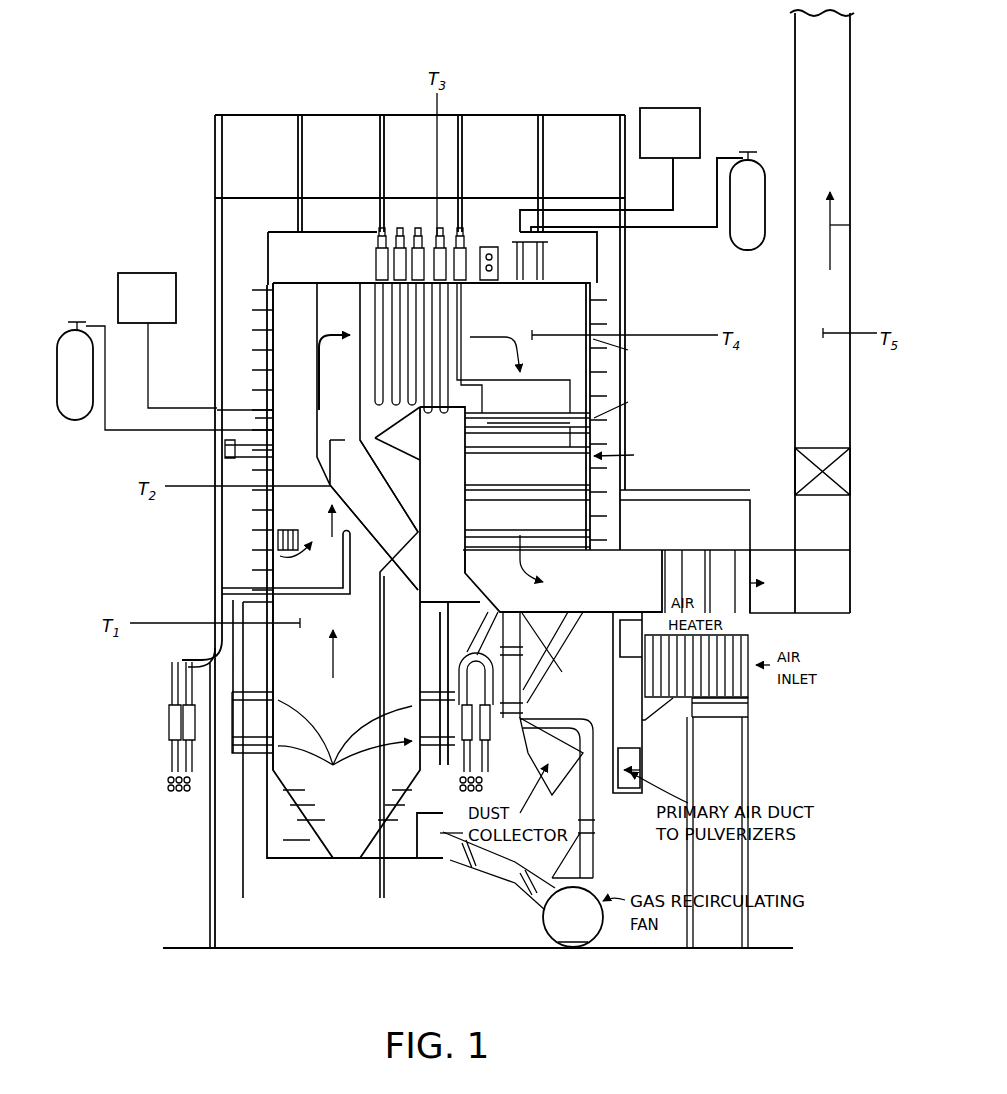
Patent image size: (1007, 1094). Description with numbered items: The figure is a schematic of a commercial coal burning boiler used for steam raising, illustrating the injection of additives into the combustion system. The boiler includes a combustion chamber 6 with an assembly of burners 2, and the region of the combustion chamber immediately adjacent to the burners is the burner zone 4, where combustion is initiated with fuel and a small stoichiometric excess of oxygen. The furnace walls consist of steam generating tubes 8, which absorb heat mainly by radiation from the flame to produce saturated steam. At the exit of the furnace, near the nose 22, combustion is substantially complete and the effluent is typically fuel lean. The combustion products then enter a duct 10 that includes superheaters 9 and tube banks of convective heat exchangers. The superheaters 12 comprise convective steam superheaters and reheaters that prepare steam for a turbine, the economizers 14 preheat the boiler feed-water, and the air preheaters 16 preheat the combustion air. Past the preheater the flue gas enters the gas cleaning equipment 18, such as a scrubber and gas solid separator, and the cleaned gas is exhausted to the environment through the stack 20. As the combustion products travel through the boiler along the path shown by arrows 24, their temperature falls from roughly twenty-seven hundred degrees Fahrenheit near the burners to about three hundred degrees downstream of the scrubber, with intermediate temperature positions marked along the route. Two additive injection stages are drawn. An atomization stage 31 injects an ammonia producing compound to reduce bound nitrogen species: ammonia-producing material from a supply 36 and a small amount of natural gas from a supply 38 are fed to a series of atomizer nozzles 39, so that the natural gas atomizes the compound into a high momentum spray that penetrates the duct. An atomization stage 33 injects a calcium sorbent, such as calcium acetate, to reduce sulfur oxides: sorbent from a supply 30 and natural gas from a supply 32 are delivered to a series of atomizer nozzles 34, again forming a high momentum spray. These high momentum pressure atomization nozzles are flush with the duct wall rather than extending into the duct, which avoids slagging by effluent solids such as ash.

The burners 2 is at (343, 753).
The burner zone 4 is at (357, 724).
The combustion chamber 6 is at (273, 777).
The steam generating tubes 8 is at (222, 555).
The superheaters 9 is at (375, 253).
The duct 10 is at (468, 317).
The superheaters 12 is at (752, 490).
The economizers 14 is at (610, 522).
The air preheaters 16 is at (724, 567).
The gas cleaning equipment 18 is at (850, 470).
The stack 20 is at (850, 160).
The nose 22 is at (375, 440).
The arrows 24 is at (328, 345).
The supply 30 is at (176, 290).
The atomization stage 31 is at (707, 62).
The supply 32 is at (60, 332).
The atomization stage 33 is at (99, 264).
The atomizer nozzles 34 is at (235, 460).
The supply 36 is at (686, 108).
The supply 38 is at (762, 160).
The atomizer nozzles 39 is at (545, 243).